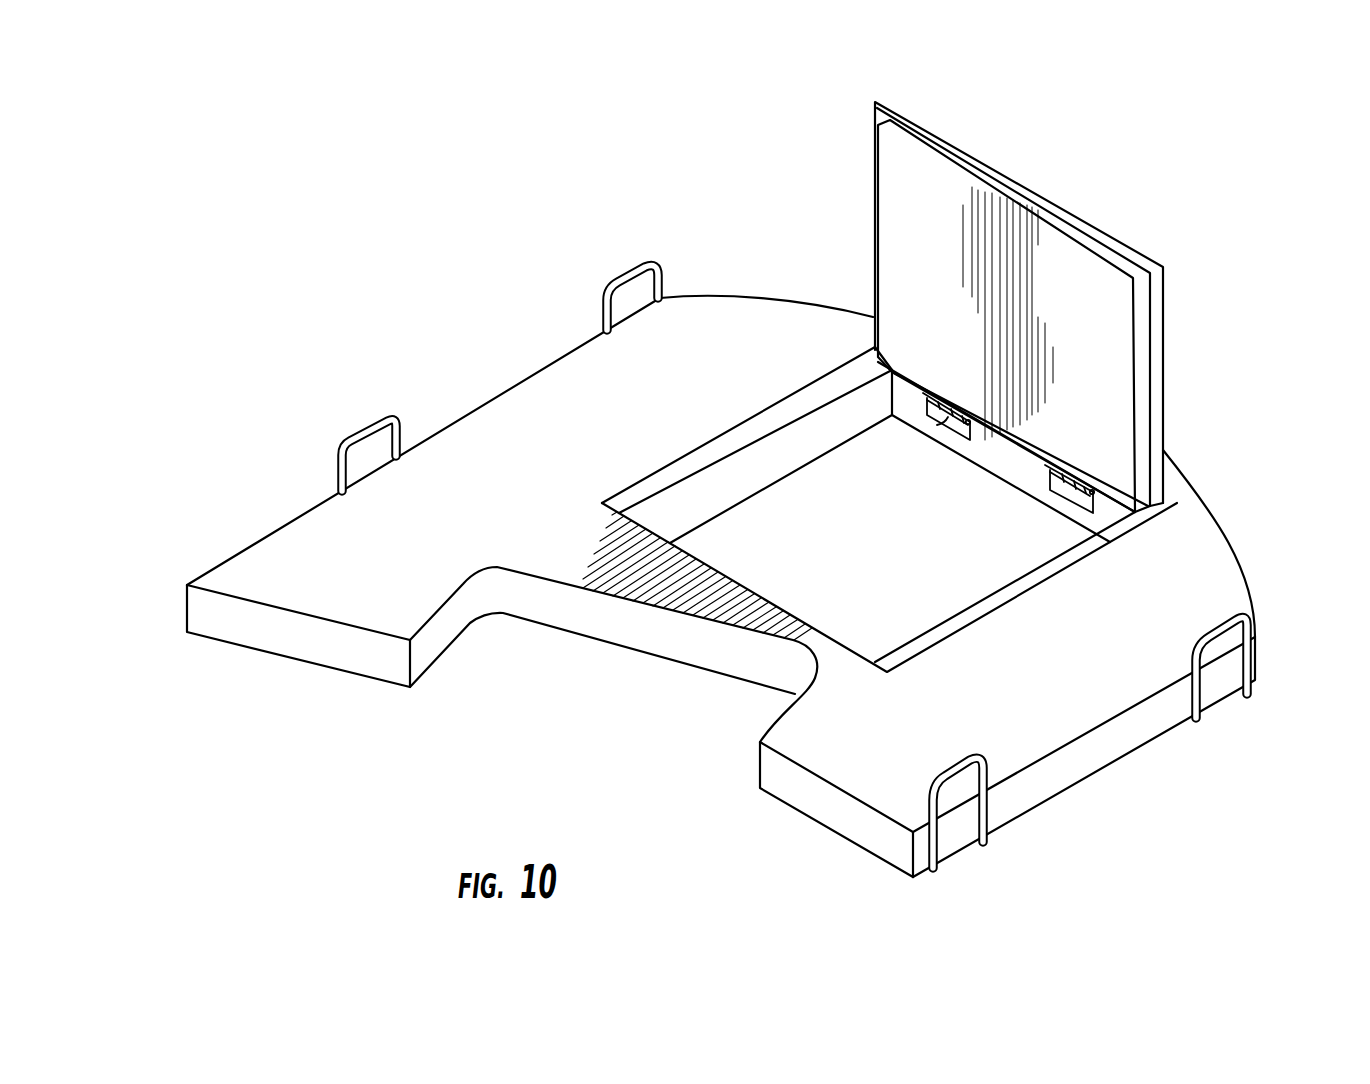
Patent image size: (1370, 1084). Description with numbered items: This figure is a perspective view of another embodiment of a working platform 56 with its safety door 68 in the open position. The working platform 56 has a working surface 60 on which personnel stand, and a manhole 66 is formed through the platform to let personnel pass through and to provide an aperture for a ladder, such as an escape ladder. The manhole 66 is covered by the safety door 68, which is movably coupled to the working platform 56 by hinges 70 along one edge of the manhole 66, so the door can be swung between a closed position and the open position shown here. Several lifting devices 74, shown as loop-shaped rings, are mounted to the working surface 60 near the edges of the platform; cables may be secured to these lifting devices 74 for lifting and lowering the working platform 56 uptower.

The working platform 56 is at (1245, 368).
The working surface 60 is at (1080, 672).
The manhole 66 is at (873, 550).
The safety door 68 is at (1021, 187).
The hinges 70 is at (937, 425).
The lifting devices 74 is at (383, 418).